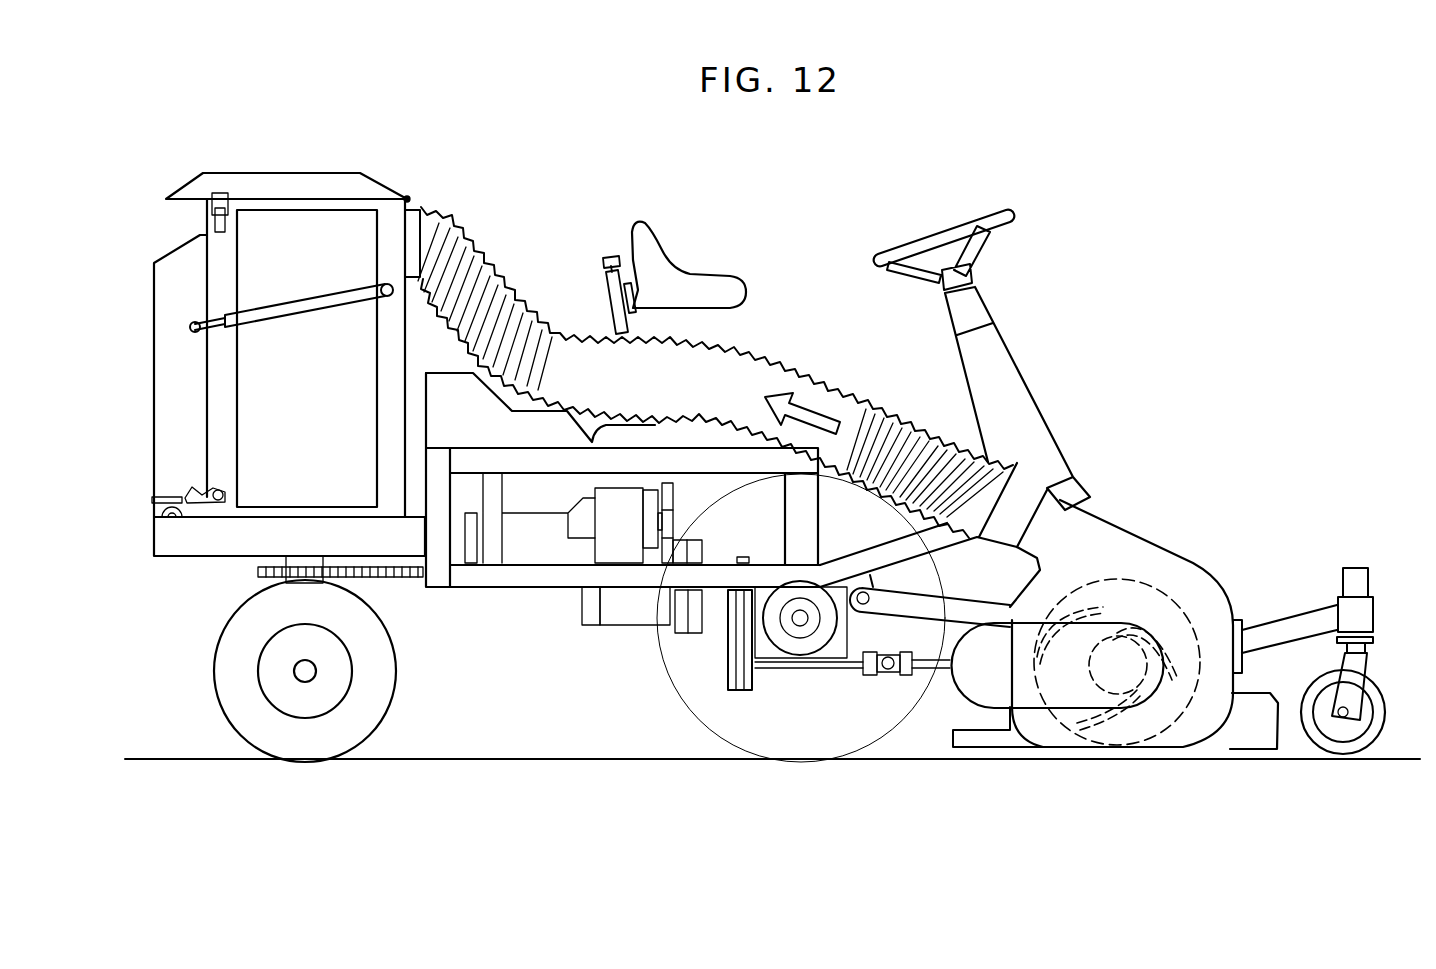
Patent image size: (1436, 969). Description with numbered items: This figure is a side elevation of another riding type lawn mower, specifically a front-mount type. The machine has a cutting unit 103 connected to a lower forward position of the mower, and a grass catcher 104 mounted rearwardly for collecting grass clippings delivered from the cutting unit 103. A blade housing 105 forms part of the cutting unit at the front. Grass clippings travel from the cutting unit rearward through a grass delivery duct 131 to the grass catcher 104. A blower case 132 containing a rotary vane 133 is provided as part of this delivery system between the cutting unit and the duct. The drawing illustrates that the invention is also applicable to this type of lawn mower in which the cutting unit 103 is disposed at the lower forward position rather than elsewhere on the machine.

The grass catcher 104 is at (342, 178).
The grass delivery duct 131 is at (548, 317).
The rotary vane 133 is at (1163, 617).
The blower case 132 is at (1093, 752).
The cutting unit 103 is at (1260, 692).
The blade housing 105 is at (1250, 737).